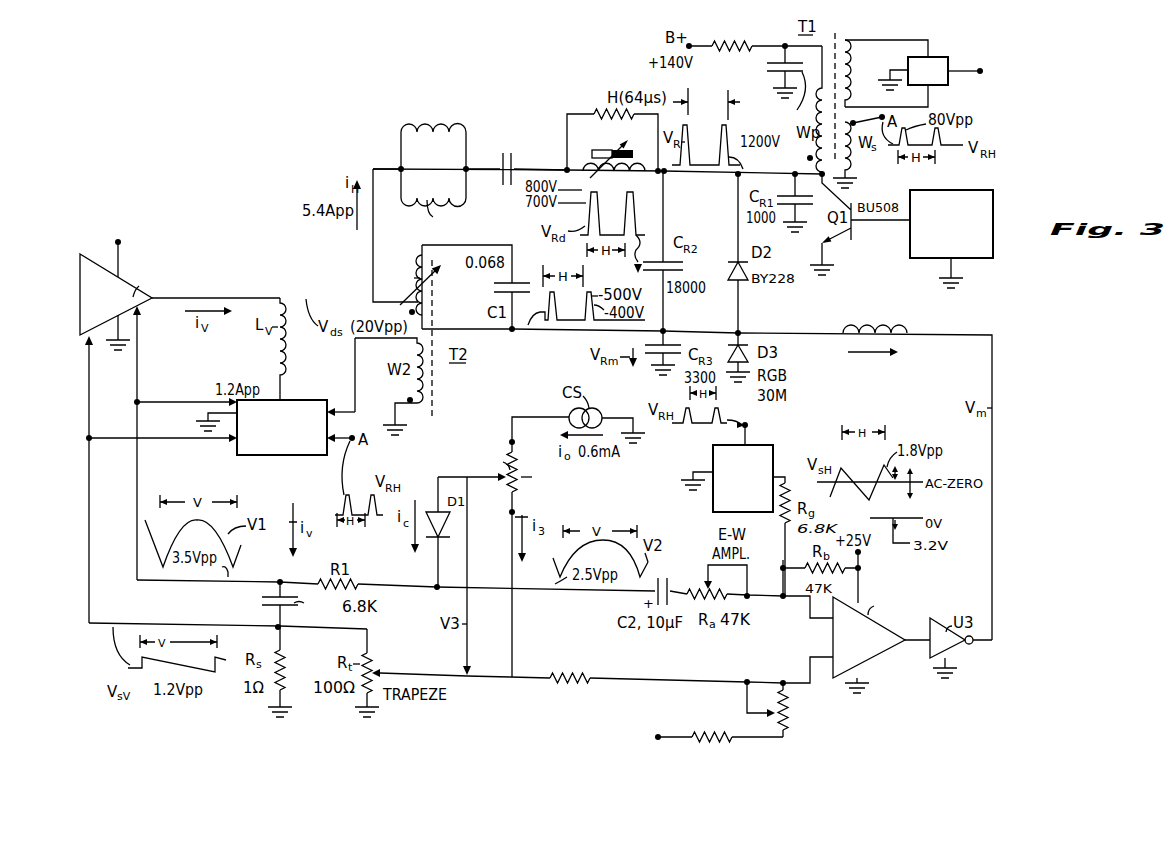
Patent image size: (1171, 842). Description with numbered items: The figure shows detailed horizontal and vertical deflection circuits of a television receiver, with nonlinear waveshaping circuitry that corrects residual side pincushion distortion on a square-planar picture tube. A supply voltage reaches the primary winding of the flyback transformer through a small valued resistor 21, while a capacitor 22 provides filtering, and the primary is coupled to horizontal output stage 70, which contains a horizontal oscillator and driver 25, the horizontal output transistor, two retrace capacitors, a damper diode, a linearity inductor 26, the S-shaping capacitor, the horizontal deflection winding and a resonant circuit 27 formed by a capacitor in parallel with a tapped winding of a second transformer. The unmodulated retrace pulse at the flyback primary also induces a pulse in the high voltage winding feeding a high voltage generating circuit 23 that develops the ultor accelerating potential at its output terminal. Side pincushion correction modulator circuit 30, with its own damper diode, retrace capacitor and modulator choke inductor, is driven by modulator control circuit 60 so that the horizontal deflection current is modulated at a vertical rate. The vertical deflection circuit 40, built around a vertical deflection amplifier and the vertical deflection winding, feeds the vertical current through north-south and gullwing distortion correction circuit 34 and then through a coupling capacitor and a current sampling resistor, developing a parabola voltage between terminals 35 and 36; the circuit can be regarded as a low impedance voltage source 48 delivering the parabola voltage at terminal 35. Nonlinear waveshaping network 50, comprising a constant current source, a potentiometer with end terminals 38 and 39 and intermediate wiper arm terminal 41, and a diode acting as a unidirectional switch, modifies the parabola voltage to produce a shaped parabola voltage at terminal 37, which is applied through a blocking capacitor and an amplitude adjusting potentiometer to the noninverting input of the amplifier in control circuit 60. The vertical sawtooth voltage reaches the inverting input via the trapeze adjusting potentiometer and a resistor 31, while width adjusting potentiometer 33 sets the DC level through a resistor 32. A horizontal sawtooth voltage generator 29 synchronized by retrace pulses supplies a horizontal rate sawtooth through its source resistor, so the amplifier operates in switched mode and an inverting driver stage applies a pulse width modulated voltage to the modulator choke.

The resistor 21 is at (734, 50).
The capacitor 22 is at (767, 66).
The high voltage generating circuit 23 is at (935, 57).
The horizontal oscillator and driver 25 is at (971, 190).
The linearity inductor 26 is at (634, 173).
The resonant circuit 27 is at (463, 304).
The horizontal sawtooth voltage generator 29 is at (773, 445).
The side pincushion correction modulator circuit 30 is at (910, 407).
The resistor 31 is at (570, 674).
The resistor 32 is at (711, 744).
The width adjusting potentiometer 33 is at (788, 708).
The north-south and gullwing distortion correction circuit 34 is at (312, 400).
The terminal 35 is at (279, 580).
The terminal 36 is at (282, 629).
The terminal 37 is at (436, 585).
The end terminal 38 is at (512, 442).
The end terminal 39 is at (511, 513).
The vertical deflection circuit 40 is at (184, 371).
The intermediate wiper arm terminal 41 is at (504, 483).
The low impedance voltage source 48 is at (250, 603).
The nonlinear waveshaping network 50 is at (464, 454).
The modulator control circuit 60 is at (913, 591).
The horizontal output stage 70 is at (508, 238).